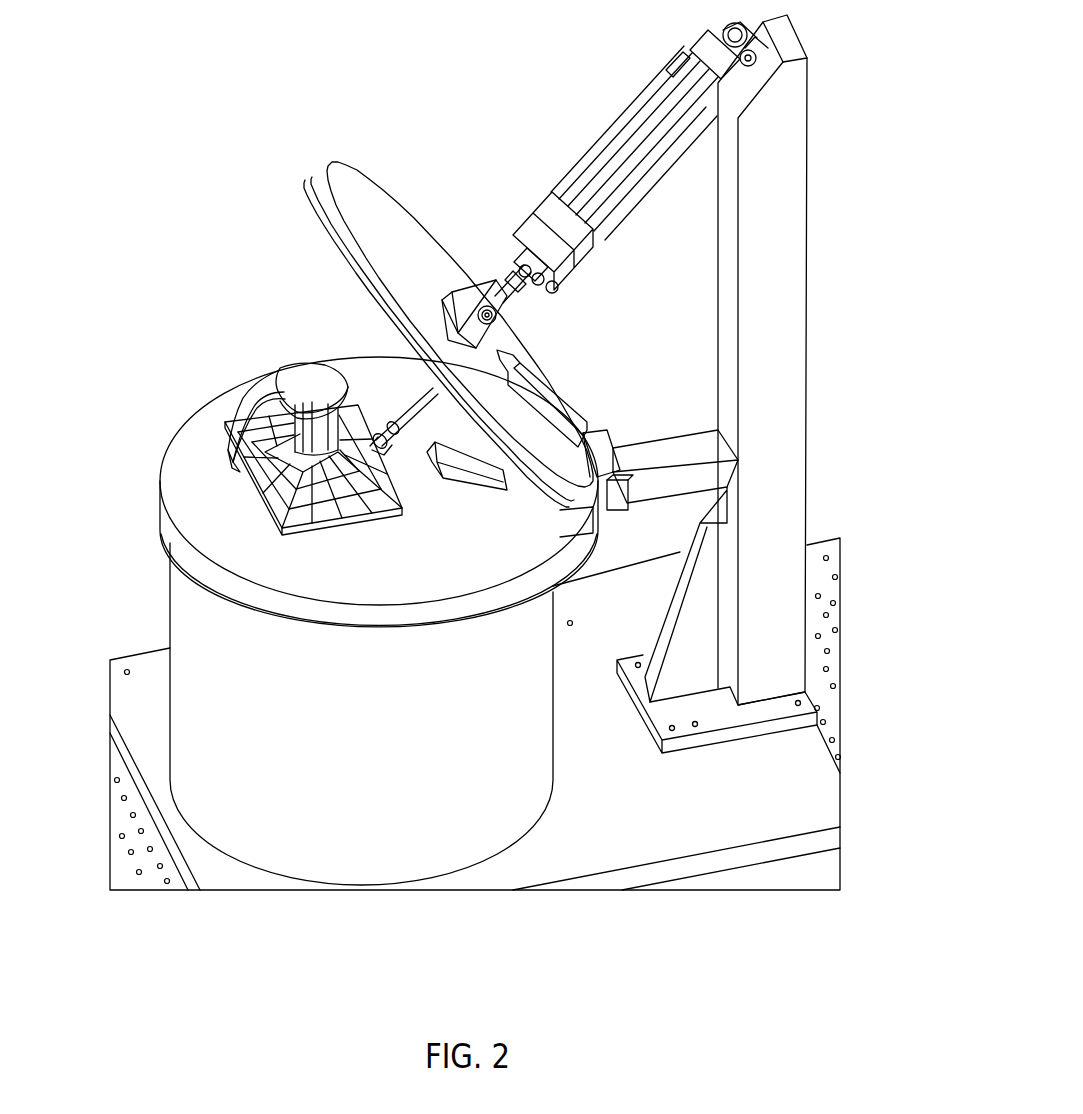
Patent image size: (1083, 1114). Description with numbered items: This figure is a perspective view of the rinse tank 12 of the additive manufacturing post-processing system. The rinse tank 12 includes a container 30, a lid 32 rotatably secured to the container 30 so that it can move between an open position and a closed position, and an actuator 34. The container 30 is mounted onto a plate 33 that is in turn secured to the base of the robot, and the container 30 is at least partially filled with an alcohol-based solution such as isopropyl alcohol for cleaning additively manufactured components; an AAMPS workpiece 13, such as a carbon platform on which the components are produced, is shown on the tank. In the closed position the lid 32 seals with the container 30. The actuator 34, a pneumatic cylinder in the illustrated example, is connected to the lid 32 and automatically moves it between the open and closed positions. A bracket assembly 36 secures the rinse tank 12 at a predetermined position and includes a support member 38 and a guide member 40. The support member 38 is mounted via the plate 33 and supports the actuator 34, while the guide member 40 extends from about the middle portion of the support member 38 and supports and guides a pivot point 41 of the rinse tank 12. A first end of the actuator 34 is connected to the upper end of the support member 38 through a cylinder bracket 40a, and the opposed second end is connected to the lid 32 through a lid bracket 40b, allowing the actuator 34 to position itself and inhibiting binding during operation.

The rinse tank 12 is at (160, 528).
The AAMPS workpiece 13 is at (258, 442).
The container 30 is at (273, 803).
The lid 32 is at (355, 208).
The plate 33 is at (224, 880).
The actuator 34 is at (655, 142).
The bracket assembly 36 is at (763, 238).
The support member 38 is at (790, 628).
The guide member 40 is at (707, 442).
The cylinder bracket 40a is at (755, 37).
The lid bracket 40b is at (488, 283).
The pivot point 41 is at (737, 460).